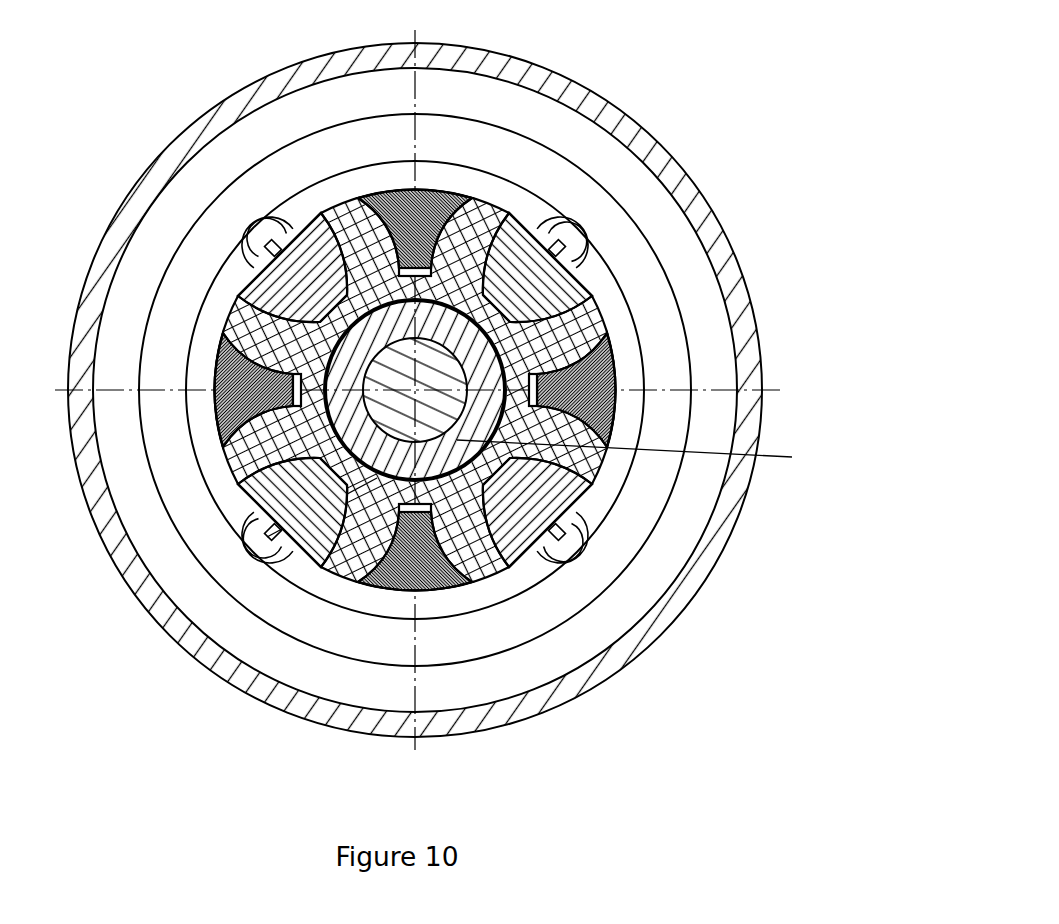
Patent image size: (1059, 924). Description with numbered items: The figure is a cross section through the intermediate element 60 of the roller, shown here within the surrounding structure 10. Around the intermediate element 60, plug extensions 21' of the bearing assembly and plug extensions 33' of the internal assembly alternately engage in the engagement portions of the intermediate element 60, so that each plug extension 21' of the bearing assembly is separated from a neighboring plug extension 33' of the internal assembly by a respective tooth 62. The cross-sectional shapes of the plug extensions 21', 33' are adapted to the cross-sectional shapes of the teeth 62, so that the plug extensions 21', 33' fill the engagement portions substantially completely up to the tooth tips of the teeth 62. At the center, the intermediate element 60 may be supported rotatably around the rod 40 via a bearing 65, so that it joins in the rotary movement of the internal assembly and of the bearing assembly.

The housing 10 is at (630, 125).
The plug extension of the bearing assembly 21' is at (419, 392).
The plug extension of the internal assembly 33' is at (414, 366).
The rod 40 is at (527, 552).
The intermediate element 60 is at (257, 558).
The tooth 62 is at (247, 475).
The bearing 65 is at (425, 452).